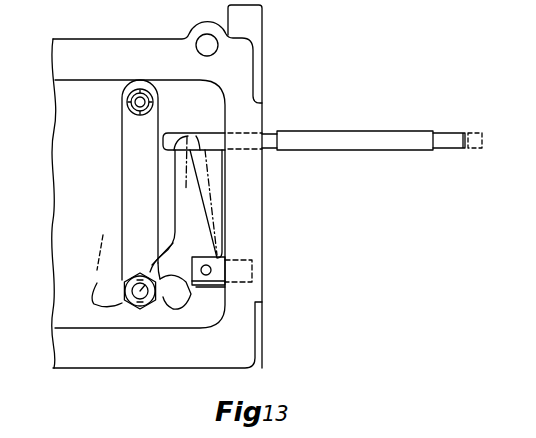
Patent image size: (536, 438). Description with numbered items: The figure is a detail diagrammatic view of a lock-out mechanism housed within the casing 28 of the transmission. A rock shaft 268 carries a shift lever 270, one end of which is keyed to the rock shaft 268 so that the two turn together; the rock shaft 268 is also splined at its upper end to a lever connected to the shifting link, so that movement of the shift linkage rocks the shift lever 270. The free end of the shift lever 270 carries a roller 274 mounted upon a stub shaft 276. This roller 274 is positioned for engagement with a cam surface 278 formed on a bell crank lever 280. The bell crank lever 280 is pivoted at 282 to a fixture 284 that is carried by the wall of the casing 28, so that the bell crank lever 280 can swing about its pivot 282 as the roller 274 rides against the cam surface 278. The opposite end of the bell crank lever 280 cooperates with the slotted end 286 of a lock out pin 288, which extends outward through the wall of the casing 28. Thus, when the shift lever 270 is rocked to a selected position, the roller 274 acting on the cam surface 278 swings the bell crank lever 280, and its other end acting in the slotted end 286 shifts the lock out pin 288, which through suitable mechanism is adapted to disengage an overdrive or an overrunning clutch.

The casing 28 is at (247, 181).
The rock shaft 268 is at (130, 101).
The shift lever 270 is at (130, 192).
The roller 274 is at (137, 290).
The stub shaft 276 is at (134, 304).
The cam surface 278 is at (185, 296).
The bell crank lever 280 is at (197, 218).
The pivot 282 is at (227, 256).
The fixture 284 is at (228, 291).
The slotted end 286 is at (220, 140).
The lock out pin 288 is at (315, 137).